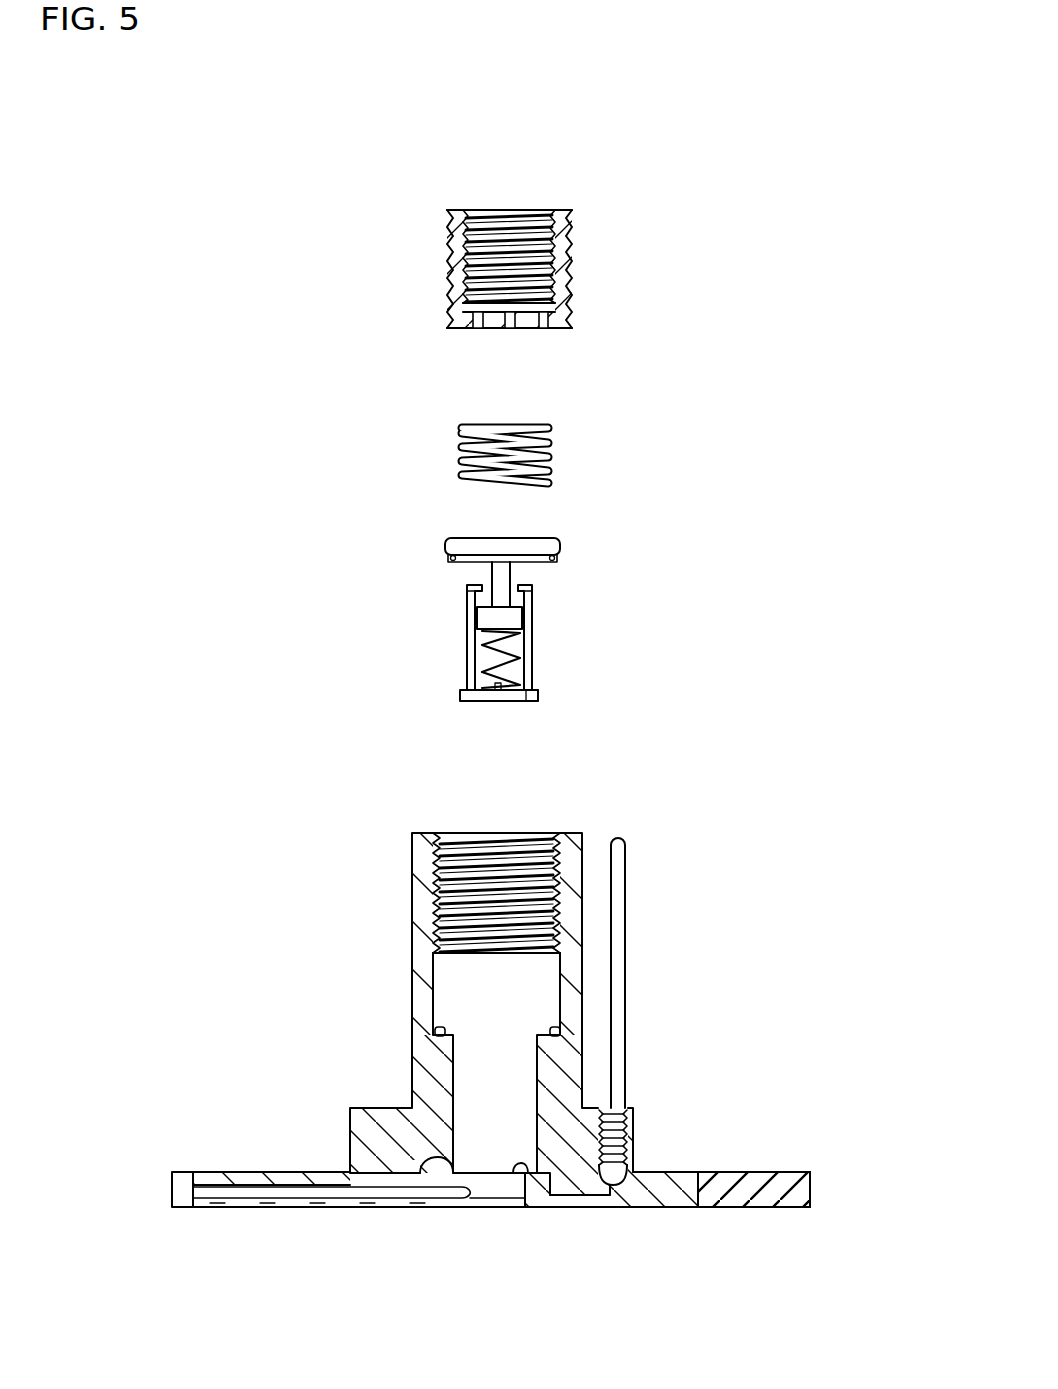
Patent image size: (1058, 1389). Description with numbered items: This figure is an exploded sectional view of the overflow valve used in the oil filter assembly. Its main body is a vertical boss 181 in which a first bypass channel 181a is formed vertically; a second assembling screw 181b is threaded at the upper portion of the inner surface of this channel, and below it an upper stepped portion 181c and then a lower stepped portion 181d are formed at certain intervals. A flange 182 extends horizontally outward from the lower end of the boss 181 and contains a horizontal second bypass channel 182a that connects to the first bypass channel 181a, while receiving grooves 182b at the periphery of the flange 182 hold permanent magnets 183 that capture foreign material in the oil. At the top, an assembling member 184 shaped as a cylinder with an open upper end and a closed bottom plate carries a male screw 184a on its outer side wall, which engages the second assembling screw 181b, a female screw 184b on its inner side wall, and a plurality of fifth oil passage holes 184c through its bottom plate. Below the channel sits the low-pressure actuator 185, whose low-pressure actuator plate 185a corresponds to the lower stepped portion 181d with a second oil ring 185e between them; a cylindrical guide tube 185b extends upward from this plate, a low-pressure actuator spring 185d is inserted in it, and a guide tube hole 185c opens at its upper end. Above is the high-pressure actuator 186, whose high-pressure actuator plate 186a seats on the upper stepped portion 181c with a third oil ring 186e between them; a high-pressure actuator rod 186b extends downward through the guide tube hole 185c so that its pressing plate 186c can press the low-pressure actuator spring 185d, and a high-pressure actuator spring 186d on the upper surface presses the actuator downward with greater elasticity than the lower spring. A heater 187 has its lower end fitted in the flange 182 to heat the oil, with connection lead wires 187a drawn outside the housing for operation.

The boss 181 is at (510, 1065).
The first bypass channel 181a is at (455, 990).
The second assembling screw 181b is at (525, 902).
The upper stepped portion 181c is at (560, 1028).
The lower stepped portion 181d is at (440, 1162).
The flange 182 is at (476, 1203).
The second bypass channel 182a is at (262, 1193).
The receiving grooves 182b is at (715, 1196).
The permanent magnets 183 is at (790, 1180).
The assembling member 184 is at (567, 212).
The male screw 184a is at (572, 256).
The female screw 184b is at (482, 264).
The fifth oil passage holes 184c is at (510, 328).
The low-pressure actuator 185 is at (525, 681).
The low-pressure actuator plate 185a is at (475, 698).
The guide tube 185b is at (468, 675).
The guide tube hole 185c is at (517, 574).
The low-pressure actuator spring 185d is at (525, 667).
The second oil ring 185e is at (532, 701).
The high-pressure actuator 186 is at (498, 602).
The high-pressure actuator plate 186a is at (545, 552).
The high-pressure actuator rod 186b is at (468, 586).
The pressing plate 186c is at (487, 620).
The high-pressure actuator spring 186d is at (552, 447).
The third oil ring 186e is at (552, 563).
The heater 187 is at (642, 1072).
The connection lead wires 187a is at (553, 1207).